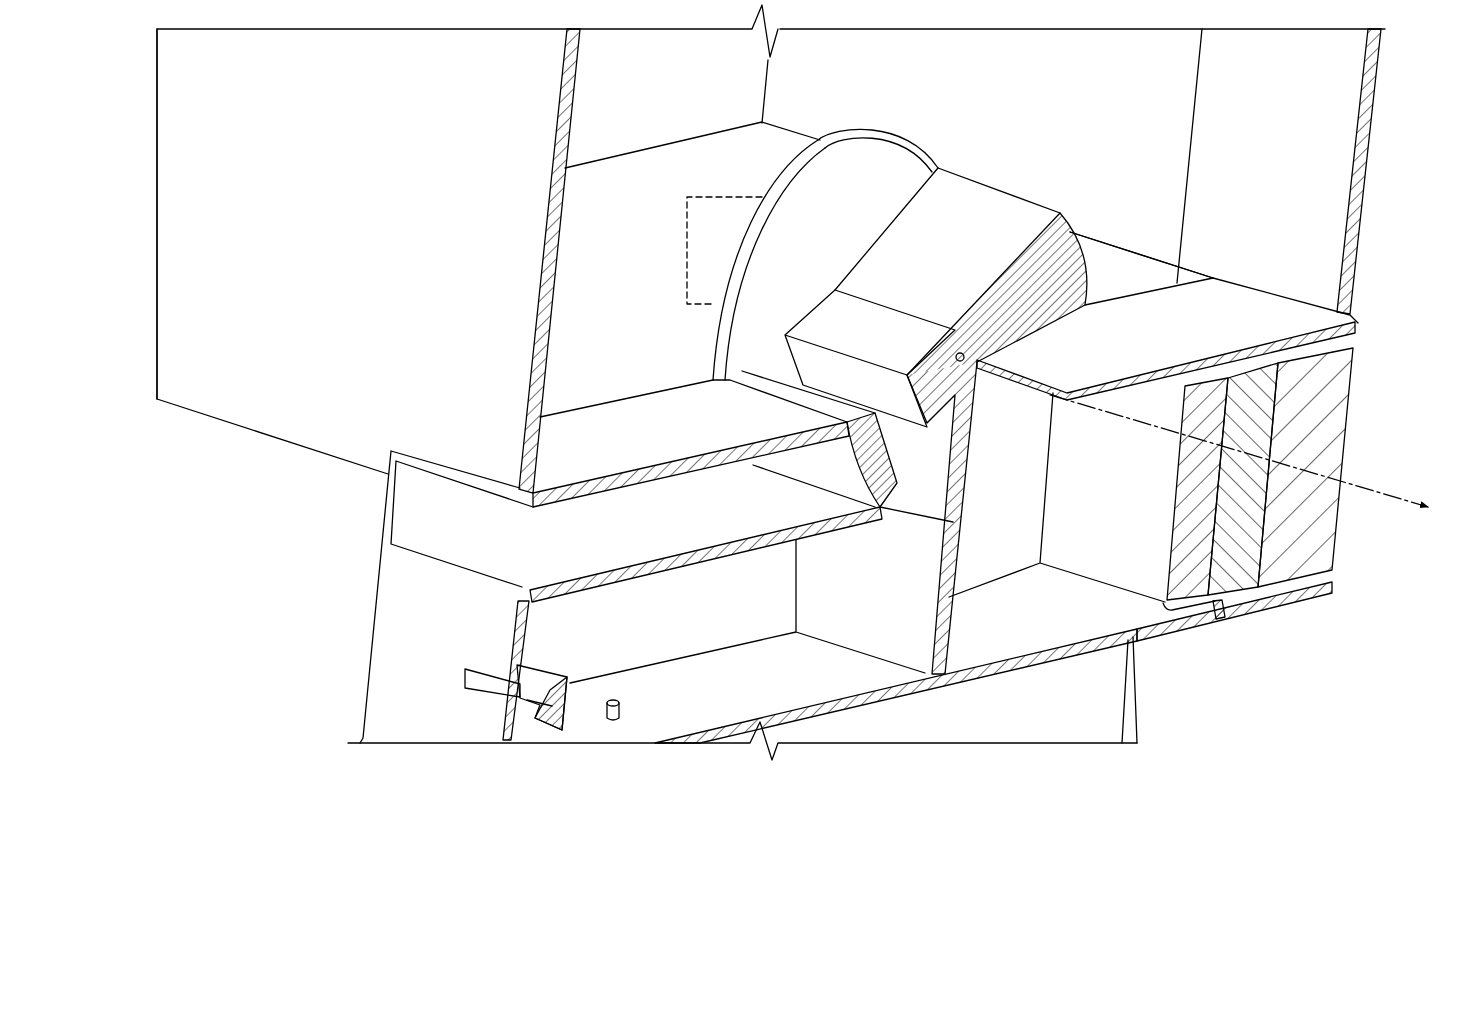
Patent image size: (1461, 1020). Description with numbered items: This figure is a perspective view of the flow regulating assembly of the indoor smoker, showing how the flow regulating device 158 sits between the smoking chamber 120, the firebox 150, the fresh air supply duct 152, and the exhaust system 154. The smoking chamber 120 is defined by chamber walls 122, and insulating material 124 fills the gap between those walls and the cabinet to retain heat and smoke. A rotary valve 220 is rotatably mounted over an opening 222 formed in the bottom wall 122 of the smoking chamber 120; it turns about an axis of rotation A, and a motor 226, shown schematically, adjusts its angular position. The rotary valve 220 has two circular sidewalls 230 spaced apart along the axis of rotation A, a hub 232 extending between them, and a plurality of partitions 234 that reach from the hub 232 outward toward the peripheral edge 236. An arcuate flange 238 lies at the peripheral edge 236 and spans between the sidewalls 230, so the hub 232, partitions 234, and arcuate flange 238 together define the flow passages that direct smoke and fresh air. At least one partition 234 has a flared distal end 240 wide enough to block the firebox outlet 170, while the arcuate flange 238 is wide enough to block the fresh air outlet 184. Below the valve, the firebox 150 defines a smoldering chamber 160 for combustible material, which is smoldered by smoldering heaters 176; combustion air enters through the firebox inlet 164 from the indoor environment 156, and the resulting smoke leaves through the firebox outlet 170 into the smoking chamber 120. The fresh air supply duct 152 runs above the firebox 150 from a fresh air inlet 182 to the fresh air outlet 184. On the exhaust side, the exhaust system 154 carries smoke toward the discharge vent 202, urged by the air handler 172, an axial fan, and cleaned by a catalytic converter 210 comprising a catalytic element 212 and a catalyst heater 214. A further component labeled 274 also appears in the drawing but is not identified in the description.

The discharge vent 202 is at (182, 148).
The exhaust system 154 is at (1206, 671).
The chamber walls 122 is at (390, 117).
The smoking chamber 120 is at (665, 96).
The insulating material 124 is at (548, 252).
The firebox 150 is at (812, 720).
The catalytic converter 210 is at (1222, 613).
The firebox outlet 170 is at (910, 530).
The opening 222 is at (990, 382).
The air handler 172 is at (1340, 403).
The catalyst heater 214 is at (1190, 392).
The catalytic element 212 is at (1255, 388).
The axis of rotation A is at (1252, 463).
The flow regulating device 158 is at (872, 119).
The circular sidewalls 230 is at (850, 237).
The rotary valve 220 is at (821, 136).
The peripheral edge 236 is at (941, 163).
The motor 226 is at (687, 262).
The hub 232 is at (888, 328).
The flared distal end 240 is at (1063, 222).
The partitions 234 is at (1066, 250).
The arcuate flange 238 is at (878, 463).
The indoor environment 156 is at (245, 676).
The fresh air inlet 182 is at (412, 508).
The fresh air supply duct 152 is at (663, 497).
The fresh air outlet 184 is at (795, 489).
The smoldering chamber 160 is at (703, 621).
The firebox inlet 164 is at (485, 694).
The support 274 is at (540, 716).
The smoldering heaters 176 is at (622, 710).